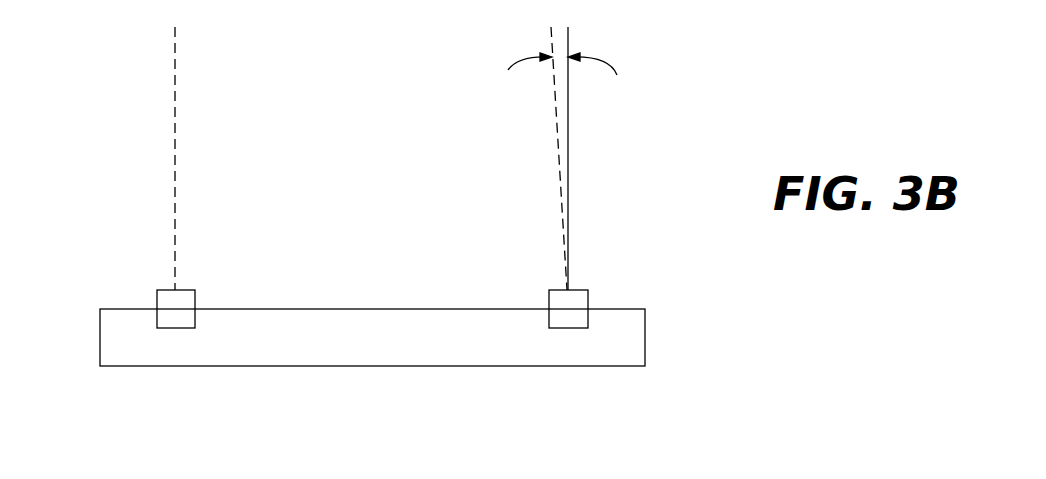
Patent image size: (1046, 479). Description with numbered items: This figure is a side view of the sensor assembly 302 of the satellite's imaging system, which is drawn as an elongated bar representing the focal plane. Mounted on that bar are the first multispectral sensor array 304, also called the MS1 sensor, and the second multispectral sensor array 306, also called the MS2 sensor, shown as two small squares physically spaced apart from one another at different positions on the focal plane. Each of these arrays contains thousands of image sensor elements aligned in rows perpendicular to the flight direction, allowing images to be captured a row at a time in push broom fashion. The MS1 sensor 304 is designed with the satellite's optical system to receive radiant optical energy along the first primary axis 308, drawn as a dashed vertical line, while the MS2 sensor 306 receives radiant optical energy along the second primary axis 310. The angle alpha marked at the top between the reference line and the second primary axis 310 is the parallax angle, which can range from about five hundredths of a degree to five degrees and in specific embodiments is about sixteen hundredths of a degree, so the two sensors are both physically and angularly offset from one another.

The sensor assembly 302 is at (395, 352).
The first multispectral sensor array 304 is at (176, 320).
The second multispectral sensor array 306 is at (569, 317).
The first primary axis 308 is at (175, 115).
The second primary axis 310 is at (556, 108).